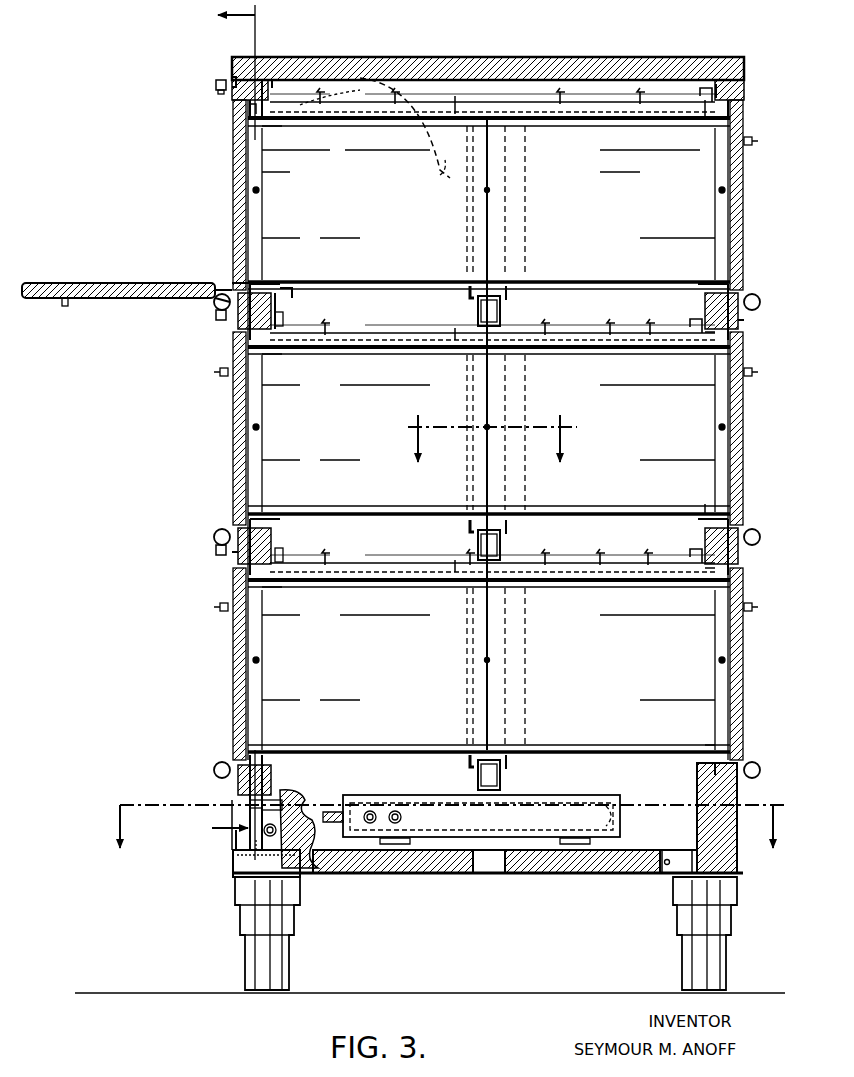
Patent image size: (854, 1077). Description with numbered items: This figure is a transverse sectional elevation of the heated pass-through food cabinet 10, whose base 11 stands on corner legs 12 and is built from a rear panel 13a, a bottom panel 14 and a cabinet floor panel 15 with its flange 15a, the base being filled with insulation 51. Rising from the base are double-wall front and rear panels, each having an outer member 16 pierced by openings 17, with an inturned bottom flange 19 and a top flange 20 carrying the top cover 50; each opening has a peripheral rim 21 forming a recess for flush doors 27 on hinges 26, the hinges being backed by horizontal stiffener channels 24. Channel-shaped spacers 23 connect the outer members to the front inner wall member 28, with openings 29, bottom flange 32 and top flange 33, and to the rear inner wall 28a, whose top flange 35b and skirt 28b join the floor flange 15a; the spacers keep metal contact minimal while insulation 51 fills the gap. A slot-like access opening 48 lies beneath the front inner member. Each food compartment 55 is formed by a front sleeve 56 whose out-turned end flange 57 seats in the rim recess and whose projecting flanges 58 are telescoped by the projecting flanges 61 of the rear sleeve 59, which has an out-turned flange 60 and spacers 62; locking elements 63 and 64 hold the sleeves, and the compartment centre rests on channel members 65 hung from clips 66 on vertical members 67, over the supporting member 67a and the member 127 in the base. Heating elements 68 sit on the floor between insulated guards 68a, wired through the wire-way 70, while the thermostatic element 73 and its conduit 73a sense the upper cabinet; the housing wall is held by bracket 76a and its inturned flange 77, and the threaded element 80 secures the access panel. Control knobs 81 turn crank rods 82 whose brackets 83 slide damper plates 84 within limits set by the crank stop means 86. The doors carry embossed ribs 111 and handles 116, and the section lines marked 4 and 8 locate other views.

The section line 4- 4 is at (219, 431).
The section line 8- 8 is at (492, 453).
The cabinet 10 is at (185, 82).
The base 11 is at (395, 890).
The corner legs 12 is at (290, 950).
The rear panel 13a is at (745, 853).
The bottom panel 14 is at (572, 875).
The cabinet floor panel 15 is at (652, 848).
The flange 15a is at (697, 830).
The outer member 16 is at (746, 320).
The openings 17 is at (745, 106).
The inturned bottom flange 19 is at (248, 802).
The top flange 20 is at (233, 82).
The peripheral rim 21 is at (236, 285).
The channel-shaped spacers 23 is at (710, 356).
The horizontal stiffener channels 24 is at (697, 768).
The hinges 26 is at (212, 306).
The doors 27 is at (747, 188).
The inner wall member 28 is at (273, 305).
The inner wall 28a is at (705, 540).
The skirt 28b is at (737, 800).
The openings 29 is at (282, 128).
The bottom flange 32 is at (272, 772).
The top flange 33 is at (266, 70).
The top flange 35b is at (745, 88).
The access opening 48 is at (228, 842).
The top cover 50 is at (594, 57).
The insulation 51 is at (428, 57).
The food compartment 55 is at (347, 215).
The front sleeve 56 is at (345, 280).
The out-turned end flange 57 is at (240, 112).
The projecting flanges 58 is at (475, 100).
The rear sleeve 59 is at (572, 280).
The out-turned flange 60 is at (728, 122).
The projecting flanges 61 is at (508, 292).
The spacers 62 is at (528, 160).
The locking elements 63 is at (490, 190).
The locking elements 64 is at (258, 190).
The channel members 65 is at (468, 306).
The clips 66 is at (500, 312).
The vertical members 67 is at (505, 792).
The supporting member 67a is at (478, 875).
The heating elements 68 is at (385, 800).
The insulated guards 68a is at (610, 802).
The wire-way 70 is at (284, 875).
The thermostatic element 73 is at (428, 155).
The conduit 73a is at (390, 148).
The bracket 76a is at (232, 870).
The inturned flange 77 is at (233, 845).
The threaded element 80 is at (288, 790).
The control knobs 81 is at (216, 88).
The crank rod 82 is at (616, 102).
The brackets 83 is at (548, 322).
The damper plates 84 is at (385, 100).
The crank stop means 86 is at (284, 322).
The embossed ribs 111 is at (106, 282).
The handles 116 is at (751, 138).
The member 127 is at (660, 875).